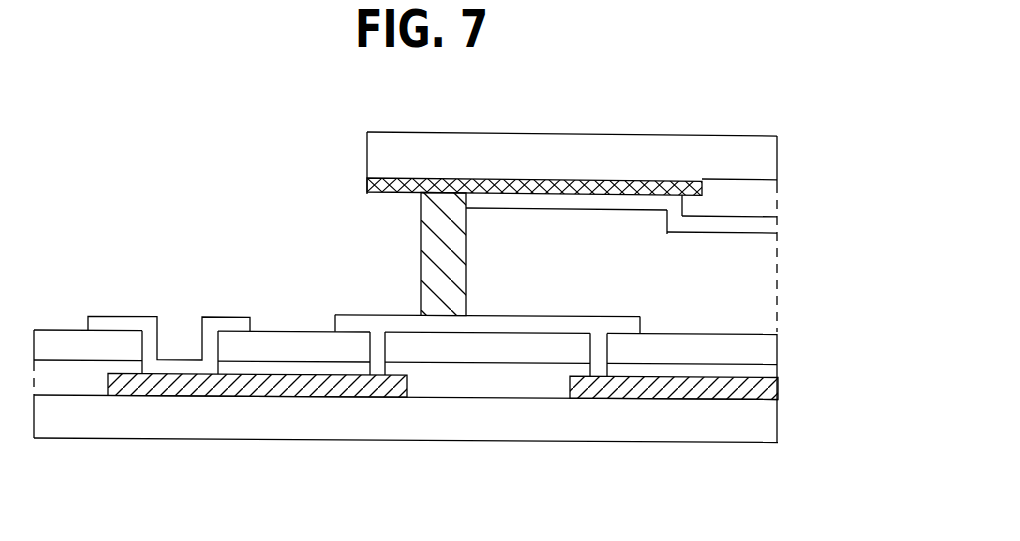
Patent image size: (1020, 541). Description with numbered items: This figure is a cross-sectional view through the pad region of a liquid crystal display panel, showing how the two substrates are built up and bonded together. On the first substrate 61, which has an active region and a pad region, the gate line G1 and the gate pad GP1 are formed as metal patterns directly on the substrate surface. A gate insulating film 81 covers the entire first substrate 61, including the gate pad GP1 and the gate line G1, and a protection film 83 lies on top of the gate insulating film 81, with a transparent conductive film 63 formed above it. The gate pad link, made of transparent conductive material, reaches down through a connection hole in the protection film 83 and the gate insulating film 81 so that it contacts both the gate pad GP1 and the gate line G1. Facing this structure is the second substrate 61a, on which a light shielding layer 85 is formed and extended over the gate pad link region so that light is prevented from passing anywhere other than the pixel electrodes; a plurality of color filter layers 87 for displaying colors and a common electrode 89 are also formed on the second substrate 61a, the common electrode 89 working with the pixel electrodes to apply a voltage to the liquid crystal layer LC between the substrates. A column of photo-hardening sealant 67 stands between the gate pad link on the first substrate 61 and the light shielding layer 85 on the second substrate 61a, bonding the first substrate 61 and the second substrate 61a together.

The first substrate 61 is at (777, 423).
The second substrate 61a is at (777, 154).
The transparent conductive film 63 is at (138, 321).
The photo-hardening sealant 67 is at (432, 256).
The gate insulating film 81 is at (777, 371).
The protection film 83 is at (777, 347).
The light shielding layer 85 is at (367, 186).
The color filter layers 87 is at (777, 198).
The common electrode 89 is at (777, 233).
The liquid crystal layer LC is at (777, 282).
The gate pad GP1 is at (192, 397).
The gate line G1 is at (698, 399).